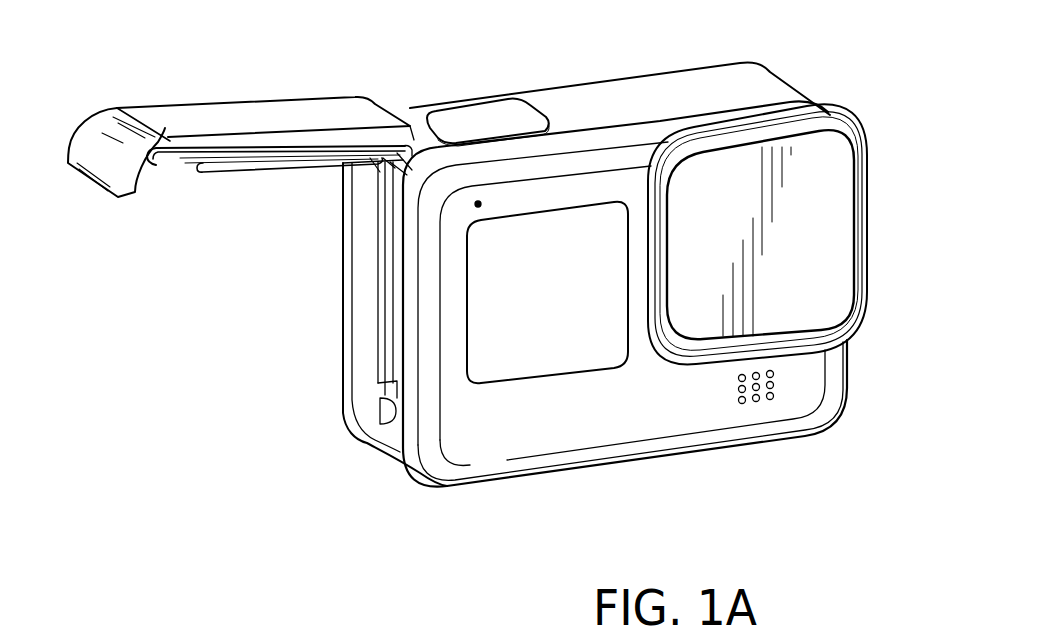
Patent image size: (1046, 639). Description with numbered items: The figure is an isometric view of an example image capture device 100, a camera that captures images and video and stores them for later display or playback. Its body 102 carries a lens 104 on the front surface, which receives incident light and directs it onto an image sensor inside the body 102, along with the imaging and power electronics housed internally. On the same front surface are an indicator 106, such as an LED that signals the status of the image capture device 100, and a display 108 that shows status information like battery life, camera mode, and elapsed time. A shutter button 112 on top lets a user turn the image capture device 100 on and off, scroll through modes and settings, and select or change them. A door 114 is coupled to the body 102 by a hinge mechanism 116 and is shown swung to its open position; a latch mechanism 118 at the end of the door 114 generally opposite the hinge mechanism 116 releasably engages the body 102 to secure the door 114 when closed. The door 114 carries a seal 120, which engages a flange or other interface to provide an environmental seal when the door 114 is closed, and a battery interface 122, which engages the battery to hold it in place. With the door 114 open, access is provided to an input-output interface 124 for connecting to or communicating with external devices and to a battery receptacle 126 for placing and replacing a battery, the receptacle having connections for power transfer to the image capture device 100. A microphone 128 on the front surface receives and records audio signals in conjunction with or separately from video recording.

The image capture device 100 is at (826, 80).
The body 102 is at (662, 87).
The lens 104 is at (827, 238).
The indicator 106 is at (475, 204).
The display 108 is at (550, 353).
The shutter button 112 is at (443, 117).
The door 114 is at (293, 110).
The hinge mechanism 116 is at (420, 143).
The latch mechanism 118 is at (95, 147).
The seal 120 is at (183, 168).
The battery interface 122 is at (237, 170).
The input-output (I/O) interface 124 is at (387, 412).
The battery receptacle 126 is at (394, 191).
The microphone 128 is at (756, 402).